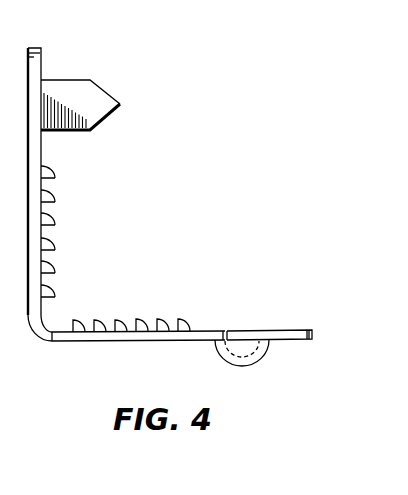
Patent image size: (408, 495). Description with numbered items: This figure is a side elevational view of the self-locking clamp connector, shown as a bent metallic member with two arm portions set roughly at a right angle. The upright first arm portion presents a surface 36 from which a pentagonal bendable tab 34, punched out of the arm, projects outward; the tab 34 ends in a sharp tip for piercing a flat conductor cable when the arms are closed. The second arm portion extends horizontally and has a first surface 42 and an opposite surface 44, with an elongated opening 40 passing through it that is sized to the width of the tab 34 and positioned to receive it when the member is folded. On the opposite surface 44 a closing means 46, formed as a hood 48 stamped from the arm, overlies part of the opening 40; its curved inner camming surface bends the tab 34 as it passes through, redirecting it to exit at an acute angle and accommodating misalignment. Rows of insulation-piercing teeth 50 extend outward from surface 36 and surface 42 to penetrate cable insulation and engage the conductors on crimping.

The bendable tab 34 is at (113, 97).
The surface of the first arm portion 36 is at (41, 67).
The opening 40 is at (267, 330).
The surface of the second arm portion 42 is at (127, 331).
The opposite surface of the second arm portion 44 is at (92, 347).
The closing means 46 is at (235, 349).
The hood 48 is at (253, 365).
The insulation-piercing teeth 50 is at (55, 220).